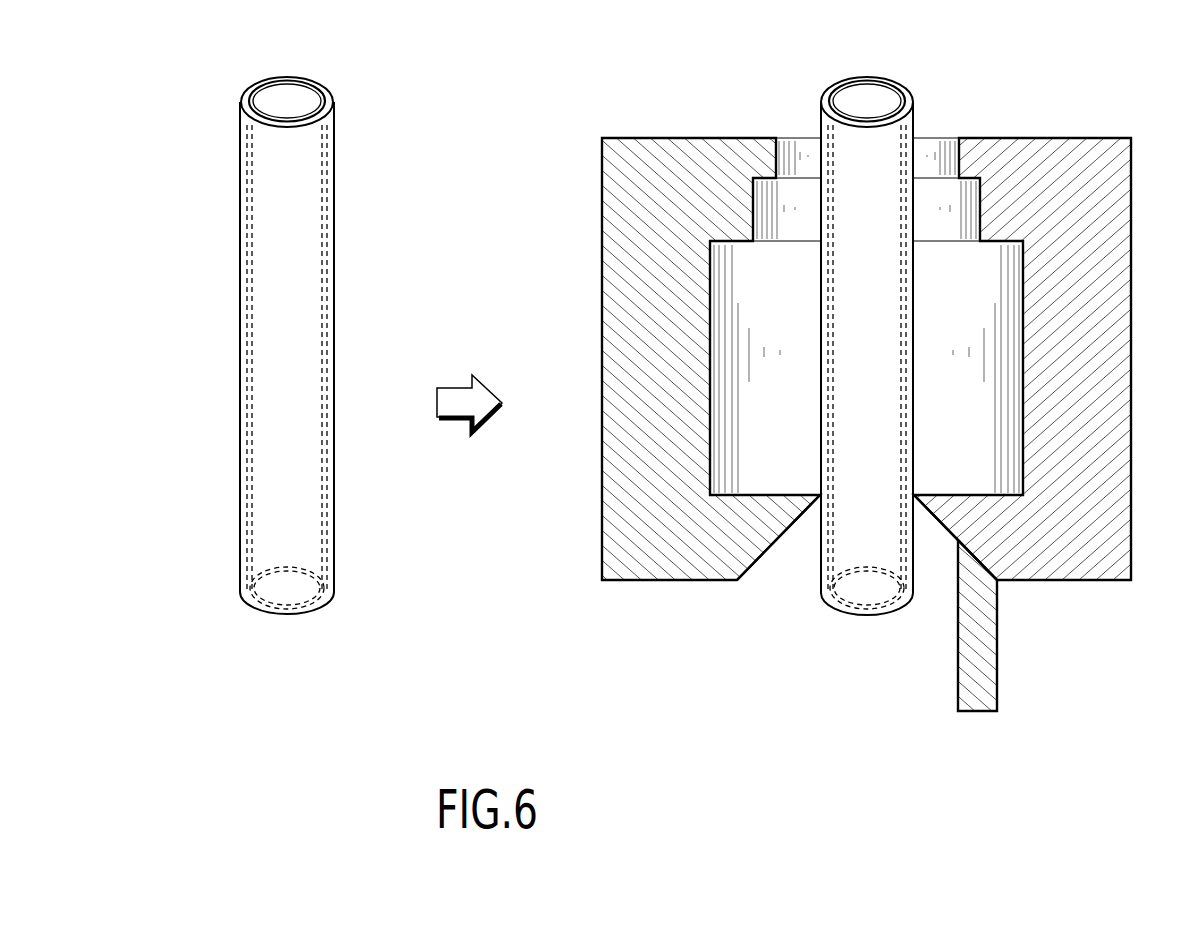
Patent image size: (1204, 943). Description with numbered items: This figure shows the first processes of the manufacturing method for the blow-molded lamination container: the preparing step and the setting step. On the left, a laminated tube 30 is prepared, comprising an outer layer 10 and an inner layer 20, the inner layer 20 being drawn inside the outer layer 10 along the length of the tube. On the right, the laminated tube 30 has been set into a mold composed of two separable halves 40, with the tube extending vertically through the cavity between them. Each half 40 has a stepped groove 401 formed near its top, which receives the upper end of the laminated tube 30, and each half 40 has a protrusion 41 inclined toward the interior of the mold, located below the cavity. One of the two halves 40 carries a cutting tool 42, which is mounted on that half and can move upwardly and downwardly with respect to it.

The outer layer 10 is at (333, 228).
The inner layer 20 is at (250, 388).
The laminated tube 30 is at (322, 79).
The half 40 is at (1104, 121).
The stepped groove 401 is at (963, 183).
The protrusion 41 is at (914, 495).
The cutting tool 42 is at (984, 660).